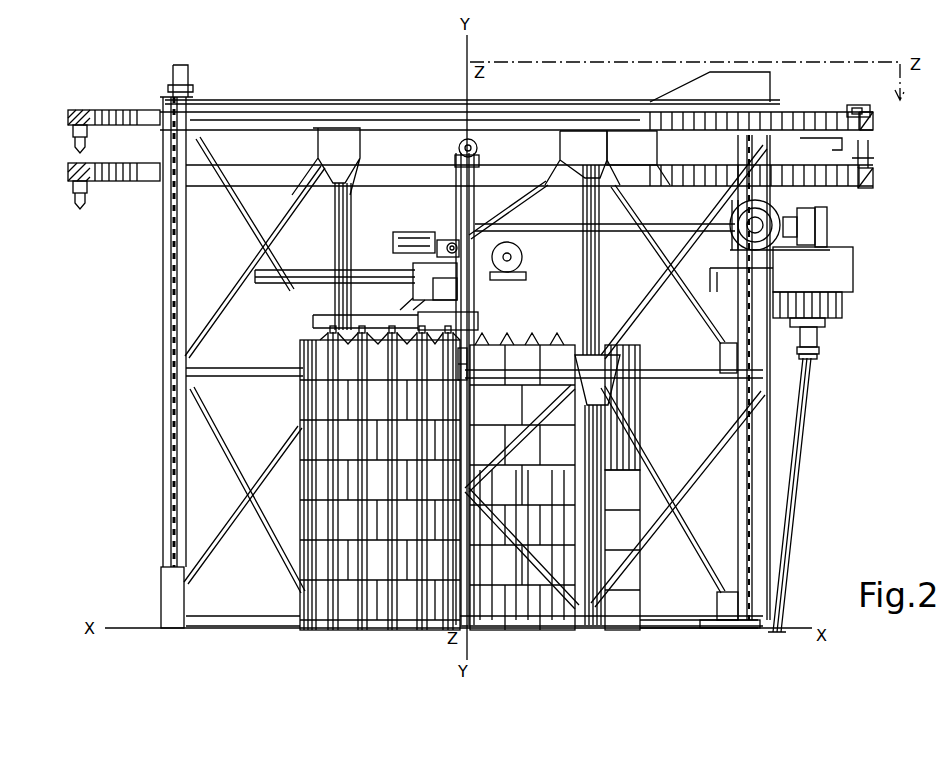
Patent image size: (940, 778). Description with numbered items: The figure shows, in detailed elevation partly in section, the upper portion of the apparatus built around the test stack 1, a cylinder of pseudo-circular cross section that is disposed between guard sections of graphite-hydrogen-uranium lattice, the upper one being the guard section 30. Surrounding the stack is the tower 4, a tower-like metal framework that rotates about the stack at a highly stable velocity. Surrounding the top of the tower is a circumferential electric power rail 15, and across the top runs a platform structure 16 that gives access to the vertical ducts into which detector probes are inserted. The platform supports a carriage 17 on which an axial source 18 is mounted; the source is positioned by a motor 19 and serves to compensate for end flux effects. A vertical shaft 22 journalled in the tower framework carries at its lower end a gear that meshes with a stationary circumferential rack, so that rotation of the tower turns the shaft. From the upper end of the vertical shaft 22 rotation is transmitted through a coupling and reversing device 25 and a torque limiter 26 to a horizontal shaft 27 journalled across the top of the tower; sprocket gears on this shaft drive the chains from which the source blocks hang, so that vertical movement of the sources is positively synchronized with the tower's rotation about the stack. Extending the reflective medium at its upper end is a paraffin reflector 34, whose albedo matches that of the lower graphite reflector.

The stack 1 is at (318, 528).
The tower 4 is at (740, 509).
The circumferential electric power rail 15 is at (870, 175).
The platform structure 16 is at (302, 261).
The carriage 17 is at (410, 270).
The axial source 18 is at (466, 379).
The motor 19 is at (412, 240).
The vertical shaft 22 is at (795, 522).
The coupling and reversing device 25 is at (838, 264).
The torque limiter 26 is at (766, 219).
The horizontal shaft 27 is at (617, 229).
The guard section 30 is at (300, 408).
The paraffin reflector 34 is at (366, 318).